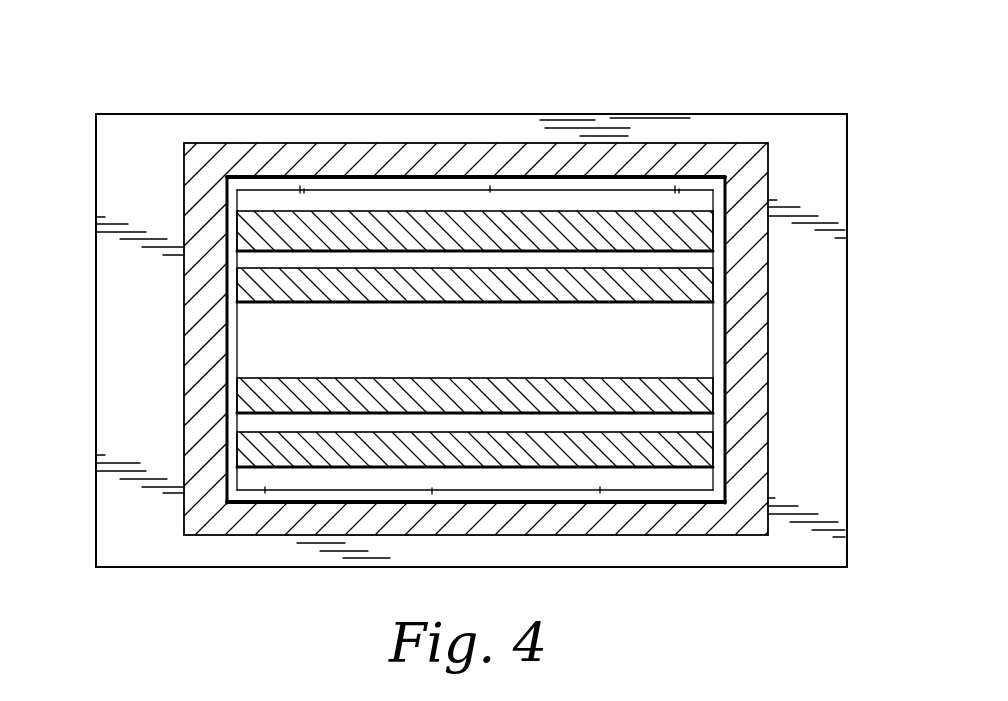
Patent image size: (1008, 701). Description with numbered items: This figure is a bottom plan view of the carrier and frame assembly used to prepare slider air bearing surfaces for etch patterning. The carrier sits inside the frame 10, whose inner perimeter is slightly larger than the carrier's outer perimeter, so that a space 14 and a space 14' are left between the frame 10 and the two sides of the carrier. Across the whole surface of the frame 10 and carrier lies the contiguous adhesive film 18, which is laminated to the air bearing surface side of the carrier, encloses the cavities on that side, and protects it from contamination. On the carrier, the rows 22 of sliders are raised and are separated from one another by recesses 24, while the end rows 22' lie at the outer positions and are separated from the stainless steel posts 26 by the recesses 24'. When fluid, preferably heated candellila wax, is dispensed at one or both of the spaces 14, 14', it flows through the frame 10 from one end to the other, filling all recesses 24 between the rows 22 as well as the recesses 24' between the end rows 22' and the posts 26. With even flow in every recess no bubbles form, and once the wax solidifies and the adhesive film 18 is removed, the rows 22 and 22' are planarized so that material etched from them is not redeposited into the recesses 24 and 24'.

The frame 10 is at (752, 347).
The space 14 is at (137, 321).
The space 14' is at (814, 322).
The adhesive film 18 is at (107, 372).
The rows 22 is at (457, 340).
The end rows 22' is at (464, 342).
The recesses 24 is at (567, 334).
The recesses 24' is at (475, 348).
The stainless steel posts 26 is at (272, 185).